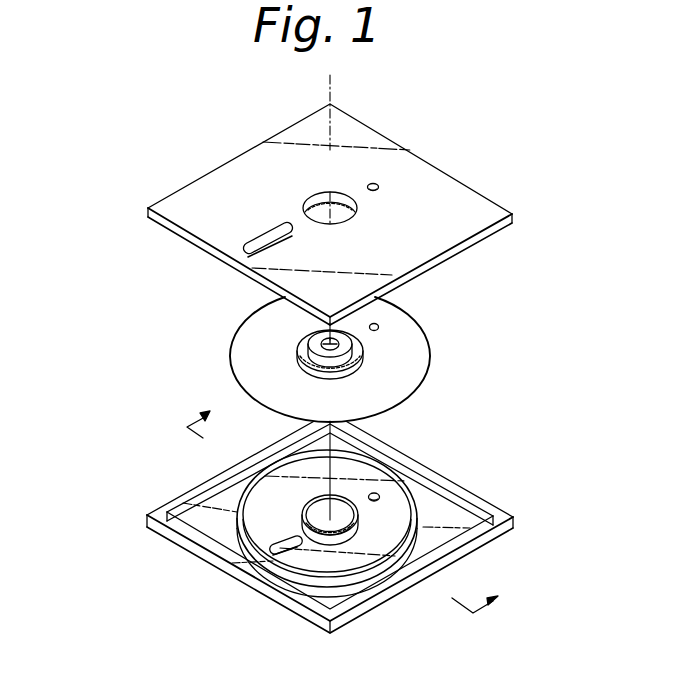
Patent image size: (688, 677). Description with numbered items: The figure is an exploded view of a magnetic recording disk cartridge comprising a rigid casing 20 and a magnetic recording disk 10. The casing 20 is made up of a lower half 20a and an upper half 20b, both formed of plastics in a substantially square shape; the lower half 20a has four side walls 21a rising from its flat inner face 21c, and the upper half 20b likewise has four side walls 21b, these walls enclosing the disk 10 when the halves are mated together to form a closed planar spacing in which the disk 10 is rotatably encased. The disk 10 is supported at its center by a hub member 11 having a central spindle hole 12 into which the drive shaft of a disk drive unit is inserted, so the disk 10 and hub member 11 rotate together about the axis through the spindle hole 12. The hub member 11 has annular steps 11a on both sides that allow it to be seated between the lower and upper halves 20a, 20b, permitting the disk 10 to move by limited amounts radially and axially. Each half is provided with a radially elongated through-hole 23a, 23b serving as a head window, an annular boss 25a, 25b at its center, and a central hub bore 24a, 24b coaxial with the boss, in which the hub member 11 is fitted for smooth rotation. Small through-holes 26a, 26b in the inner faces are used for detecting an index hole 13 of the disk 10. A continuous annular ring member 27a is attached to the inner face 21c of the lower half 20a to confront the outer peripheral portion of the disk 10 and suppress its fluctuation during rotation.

The magnetic recording disk 10 is at (410, 381).
The hub member 11 is at (317, 347).
The annular steps 11a is at (300, 360).
The central spindle hole 12 is at (322, 342).
The index hole 13 is at (379, 327).
The rigid casing 20 is at (432, 158).
The lower half 20a is at (462, 474).
The upper half 20b is at (458, 200).
The side walls 21a is at (306, 622).
The side walls 21b is at (198, 180).
The inner face 21c is at (208, 498).
The radially elongated through-hole 23a is at (268, 562).
The radially elongated through-hole 23b is at (230, 262).
The central hub bore 24a is at (358, 528).
The central hub bore 24b is at (357, 215).
The annular boss 25a is at (320, 543).
The annular boss 25b is at (323, 193).
The small through-hole 26a is at (380, 500).
The small through-hole 26b is at (380, 185).
The ring member 27a is at (386, 459).